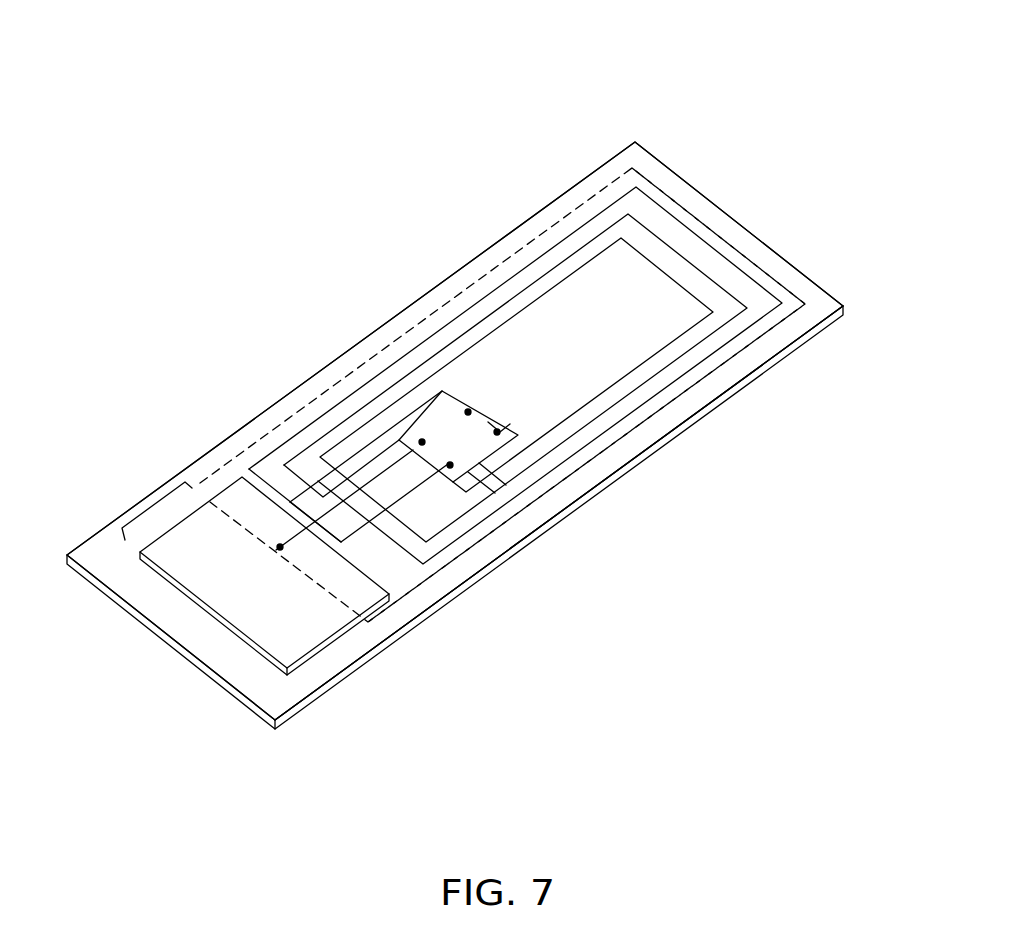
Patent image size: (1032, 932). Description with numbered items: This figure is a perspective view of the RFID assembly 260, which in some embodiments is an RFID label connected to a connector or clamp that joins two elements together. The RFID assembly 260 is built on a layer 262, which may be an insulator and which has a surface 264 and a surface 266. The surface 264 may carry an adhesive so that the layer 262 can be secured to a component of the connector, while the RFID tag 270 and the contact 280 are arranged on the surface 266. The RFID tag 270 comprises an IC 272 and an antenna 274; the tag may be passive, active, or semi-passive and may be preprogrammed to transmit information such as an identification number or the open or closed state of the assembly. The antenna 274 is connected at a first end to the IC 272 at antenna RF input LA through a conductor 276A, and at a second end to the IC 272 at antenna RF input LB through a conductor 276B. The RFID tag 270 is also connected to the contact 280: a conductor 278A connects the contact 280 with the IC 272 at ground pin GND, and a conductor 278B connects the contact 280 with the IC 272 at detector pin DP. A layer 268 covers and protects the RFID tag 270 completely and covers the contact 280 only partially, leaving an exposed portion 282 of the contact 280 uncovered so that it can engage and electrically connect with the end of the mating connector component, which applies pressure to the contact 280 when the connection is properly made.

The RFID assembly 260 is at (816, 97).
The layer 262 is at (230, 668).
The surface 264 is at (298, 715).
The surface 266 is at (345, 650).
The layer 268 is at (258, 443).
The RFID tag 270 is at (762, 258).
The IC 272 is at (524, 402).
The antenna 274 is at (655, 232).
The conductor 276A is at (420, 403).
The conductor 276B is at (470, 470).
The conductor 278A is at (322, 528).
The conductor 278B is at (350, 542).
The contact 280 is at (182, 567).
The exposed portion 282 is at (158, 500).
The antenna RF input LA is at (469, 410).
The antenna RF input LB is at (497, 434).
The detector pin DP is at (452, 466).
The ground pin GND is at (422, 442).